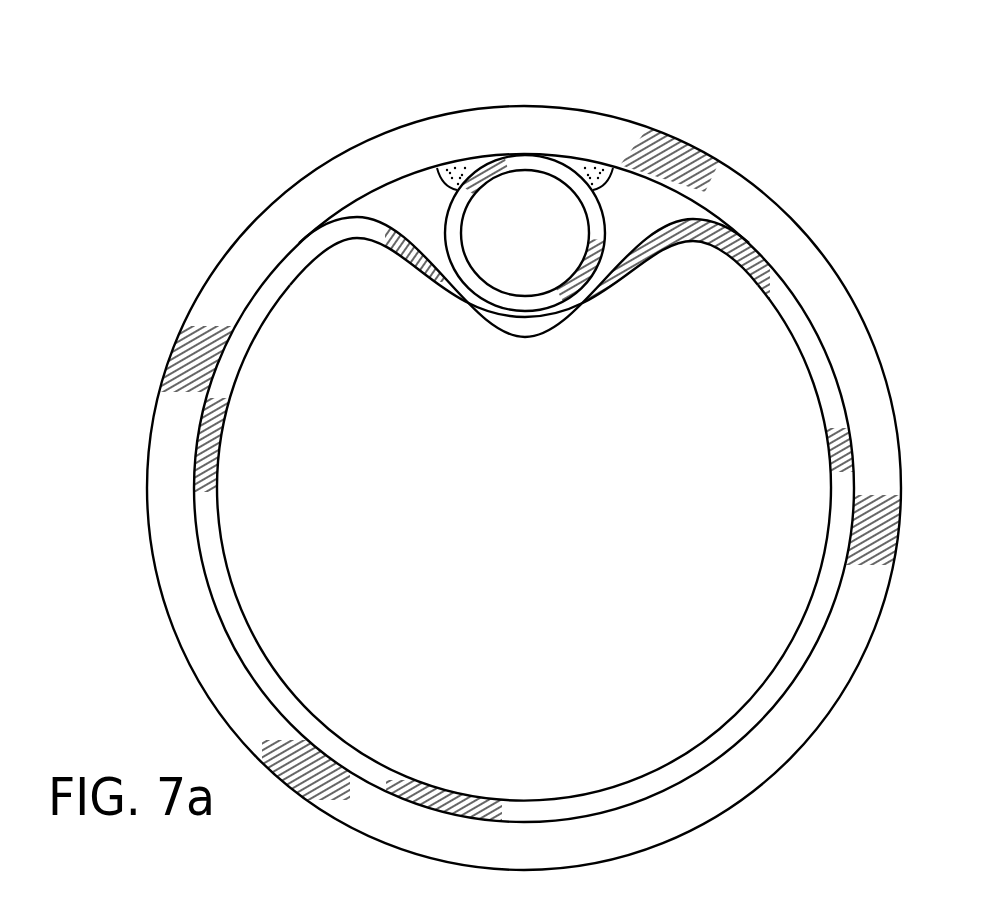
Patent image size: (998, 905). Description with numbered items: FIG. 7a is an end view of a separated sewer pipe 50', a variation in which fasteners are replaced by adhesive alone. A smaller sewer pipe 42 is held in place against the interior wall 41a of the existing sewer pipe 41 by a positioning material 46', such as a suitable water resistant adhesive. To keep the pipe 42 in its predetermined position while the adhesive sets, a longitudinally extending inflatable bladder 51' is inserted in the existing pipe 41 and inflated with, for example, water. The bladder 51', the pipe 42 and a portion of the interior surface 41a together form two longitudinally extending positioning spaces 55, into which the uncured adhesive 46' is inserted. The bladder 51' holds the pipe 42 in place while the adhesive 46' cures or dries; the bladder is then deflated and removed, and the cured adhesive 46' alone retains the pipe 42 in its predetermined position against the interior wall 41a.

The separated sewer pipe 50' is at (559, 484).
The existing sewer pipe 41 is at (807, 267).
The interior wall 41a is at (840, 408).
The sewer pipe 42 is at (507, 301).
The positioning material 46' is at (515, 111).
The inflatable bladder 51' is at (522, 512).
The positioning spaces 55 is at (405, 197).